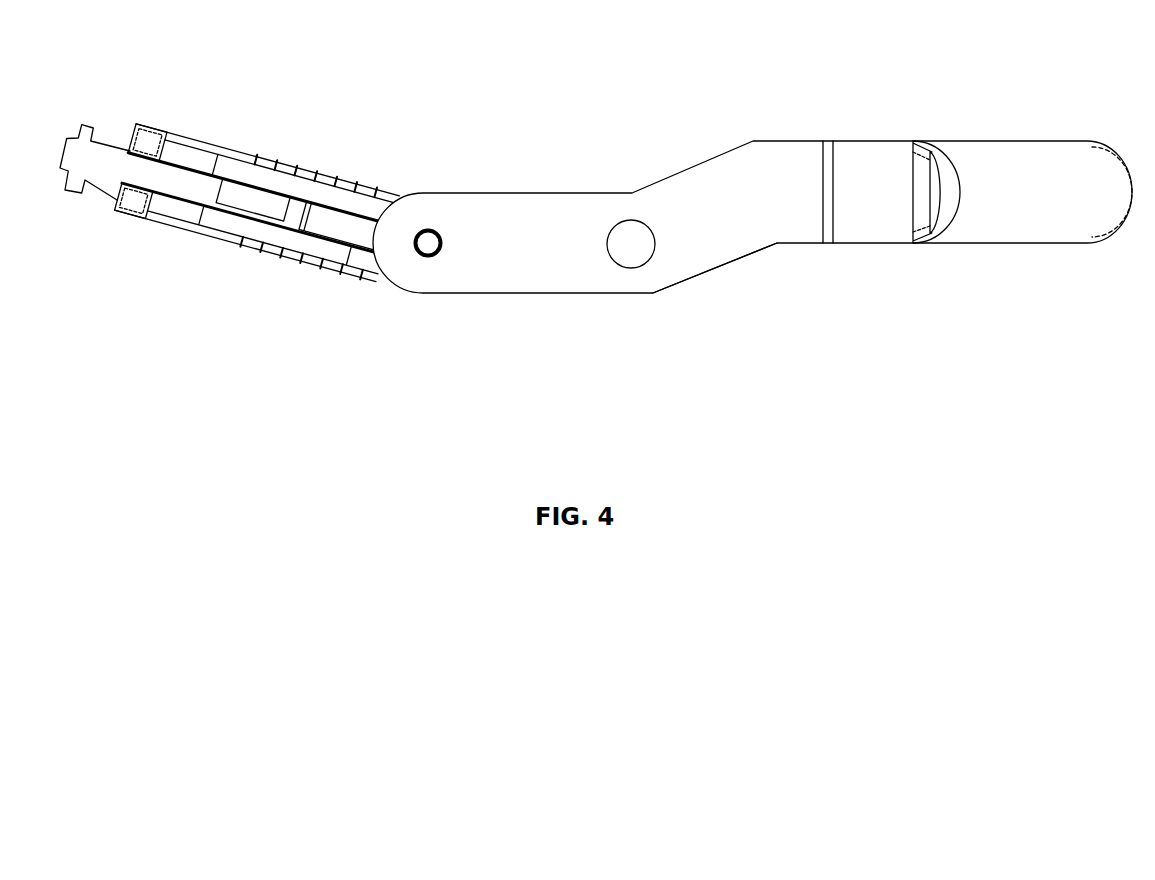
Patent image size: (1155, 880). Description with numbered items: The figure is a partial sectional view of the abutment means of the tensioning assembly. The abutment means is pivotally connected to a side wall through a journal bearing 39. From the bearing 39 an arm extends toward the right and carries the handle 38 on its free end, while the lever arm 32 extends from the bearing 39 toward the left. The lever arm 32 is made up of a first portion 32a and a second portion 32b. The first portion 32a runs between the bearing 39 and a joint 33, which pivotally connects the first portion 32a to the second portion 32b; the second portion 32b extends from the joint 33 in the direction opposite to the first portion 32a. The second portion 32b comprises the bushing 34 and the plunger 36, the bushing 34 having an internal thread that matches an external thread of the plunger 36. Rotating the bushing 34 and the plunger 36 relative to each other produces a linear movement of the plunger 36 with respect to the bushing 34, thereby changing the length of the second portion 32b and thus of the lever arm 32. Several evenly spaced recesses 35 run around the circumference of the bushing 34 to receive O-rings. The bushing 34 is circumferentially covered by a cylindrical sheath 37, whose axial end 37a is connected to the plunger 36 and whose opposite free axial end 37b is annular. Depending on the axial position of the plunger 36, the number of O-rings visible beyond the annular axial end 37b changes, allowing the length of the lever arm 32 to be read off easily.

The lever arm 32 is at (467, 206).
The first portion 32a is at (605, 295).
The second portion 32b is at (243, 238).
The joint 33 is at (427, 247).
The bushing 34 is at (222, 158).
The recesses 35 is at (256, 160).
The plunger 36 is at (160, 158).
The cylindrical sheath 37 is at (130, 218).
The axial end 37a is at (138, 125).
The free axial end 37b is at (277, 252).
The handle 38 is at (995, 141).
The journal bearing 39 is at (628, 232).